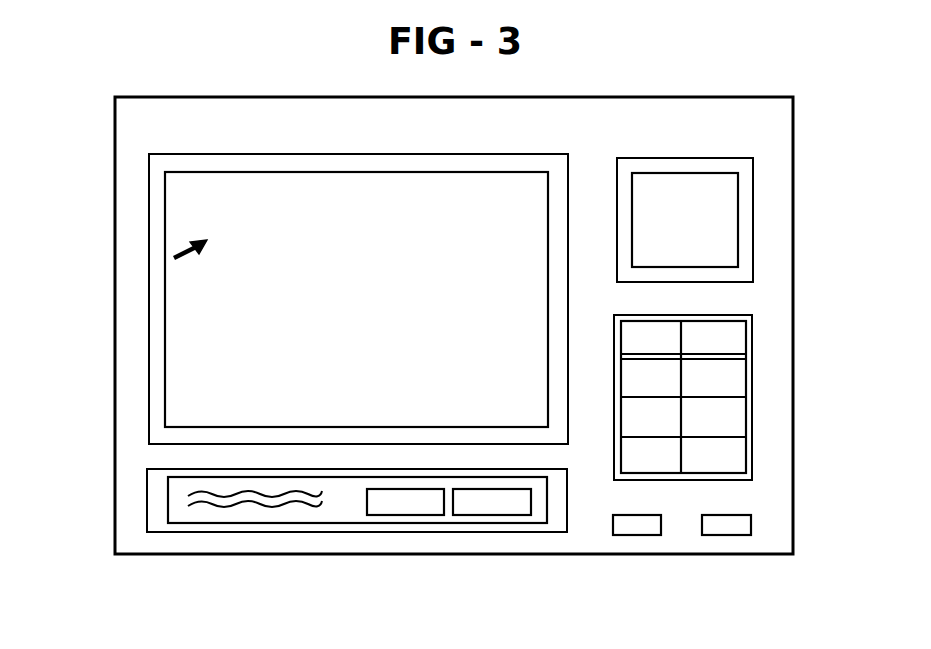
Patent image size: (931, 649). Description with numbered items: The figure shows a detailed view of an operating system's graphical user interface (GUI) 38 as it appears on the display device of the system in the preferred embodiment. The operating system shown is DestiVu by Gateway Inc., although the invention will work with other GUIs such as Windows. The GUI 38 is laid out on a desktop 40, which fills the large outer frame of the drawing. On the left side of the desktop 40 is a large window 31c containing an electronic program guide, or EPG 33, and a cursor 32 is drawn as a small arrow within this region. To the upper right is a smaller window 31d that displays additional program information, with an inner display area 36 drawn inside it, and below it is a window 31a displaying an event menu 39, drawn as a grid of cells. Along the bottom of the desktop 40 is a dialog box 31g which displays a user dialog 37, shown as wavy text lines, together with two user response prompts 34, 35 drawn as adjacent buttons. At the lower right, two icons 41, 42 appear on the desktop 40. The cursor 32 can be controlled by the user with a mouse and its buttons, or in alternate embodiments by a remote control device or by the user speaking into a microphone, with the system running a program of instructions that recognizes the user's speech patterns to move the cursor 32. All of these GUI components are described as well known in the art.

The graphical user interface 38 is at (470, 322).
The desktop 40 is at (140, 128).
The window 31c is at (218, 163).
The EPG 33 is at (163, 349).
The cursor 32 is at (182, 252).
The window 31d is at (737, 165).
The sub display window 36 is at (713, 212).
The window 31a is at (745, 358).
The event menu 39 is at (709, 408).
The dialog box 31g is at (157, 507).
The user dialog 37 is at (258, 524).
The user response prompt 34 is at (420, 508).
The user response prompt 35 is at (455, 595).
The icon 41 is at (647, 529).
The icon 42 is at (720, 529).